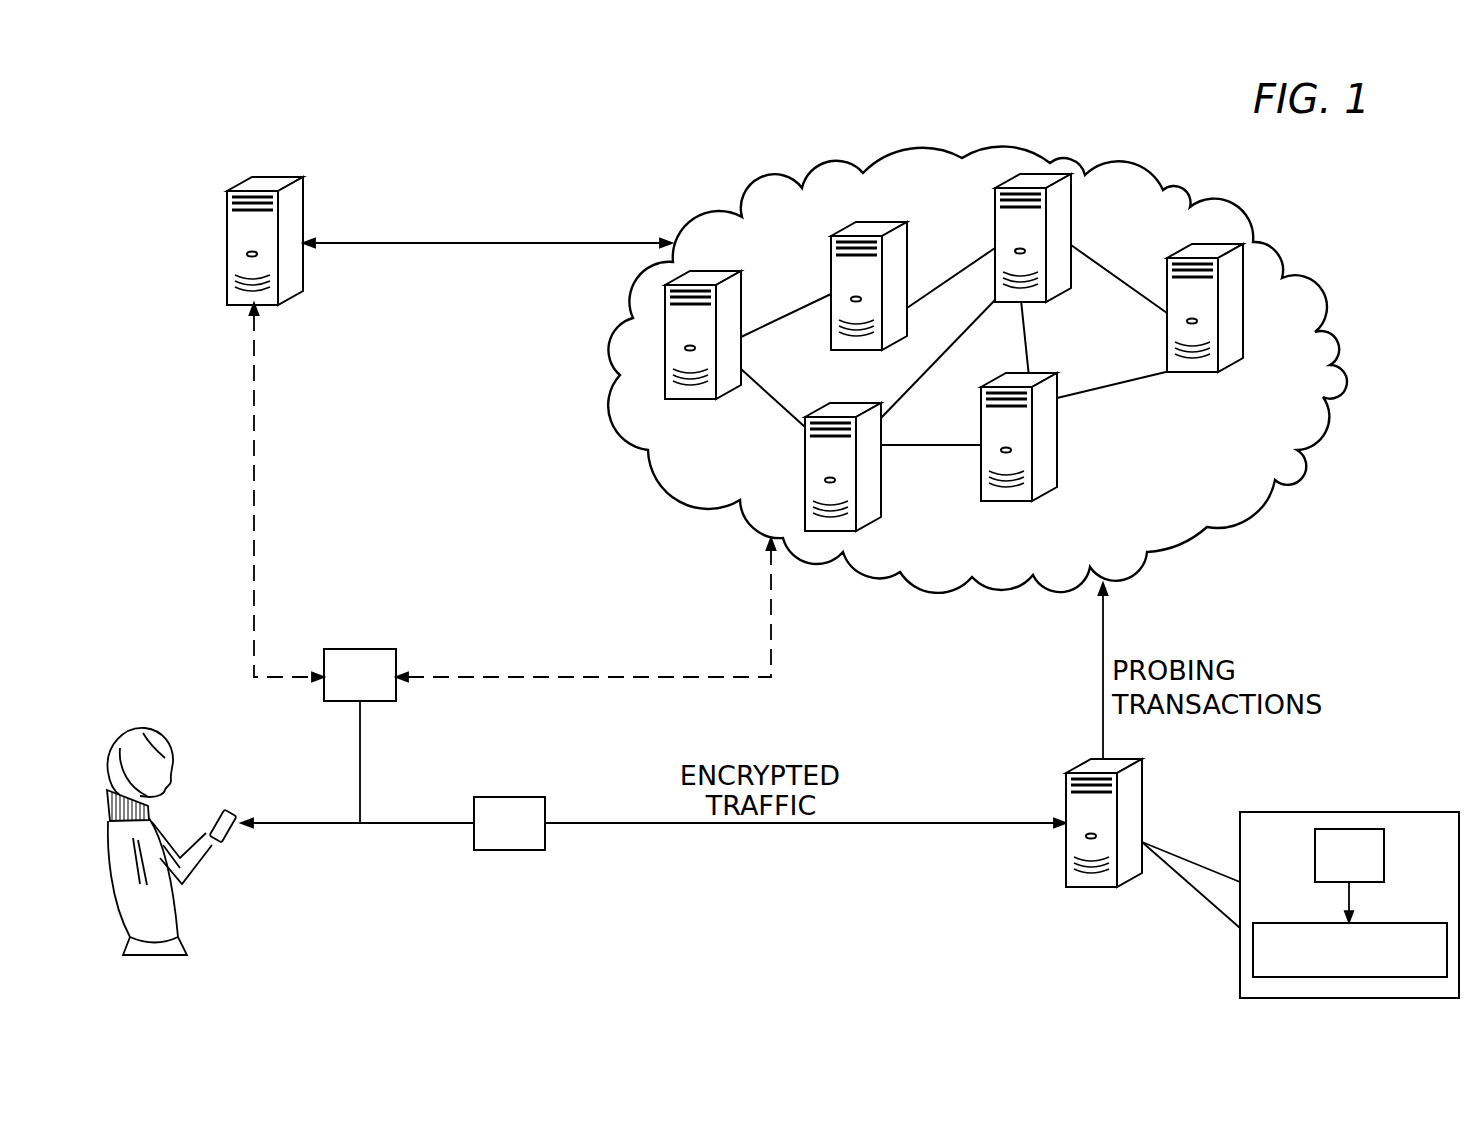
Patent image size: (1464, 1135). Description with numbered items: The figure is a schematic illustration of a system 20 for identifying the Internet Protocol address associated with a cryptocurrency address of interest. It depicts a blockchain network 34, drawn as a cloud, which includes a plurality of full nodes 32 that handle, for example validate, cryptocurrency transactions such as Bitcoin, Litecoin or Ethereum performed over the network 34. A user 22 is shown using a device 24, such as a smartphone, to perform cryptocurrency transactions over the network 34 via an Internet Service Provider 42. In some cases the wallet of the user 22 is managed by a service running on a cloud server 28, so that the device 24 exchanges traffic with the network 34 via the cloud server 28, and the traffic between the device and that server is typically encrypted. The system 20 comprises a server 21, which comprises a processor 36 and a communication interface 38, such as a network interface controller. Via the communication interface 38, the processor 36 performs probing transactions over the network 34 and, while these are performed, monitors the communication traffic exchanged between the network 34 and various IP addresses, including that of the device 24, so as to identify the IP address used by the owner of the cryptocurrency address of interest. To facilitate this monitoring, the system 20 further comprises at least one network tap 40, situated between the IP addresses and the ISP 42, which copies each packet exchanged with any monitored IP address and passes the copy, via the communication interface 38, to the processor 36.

The system 20 is at (1349, 872).
The server 21 is at (1066, 855).
The user 22 is at (155, 727).
The device 24 is at (227, 810).
The cloud server 28 is at (227, 240).
The full node 32 is at (697, 399).
The blockchain network 34 is at (977, 341).
The processor 36 is at (1432, 923).
The communication interface 38 is at (1315, 850).
The network tap 40 is at (508, 850).
The Internet Service Provider 42 is at (361, 649).